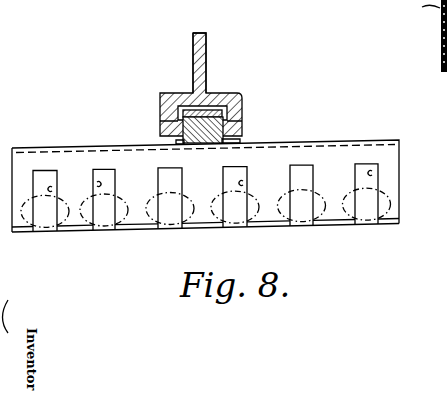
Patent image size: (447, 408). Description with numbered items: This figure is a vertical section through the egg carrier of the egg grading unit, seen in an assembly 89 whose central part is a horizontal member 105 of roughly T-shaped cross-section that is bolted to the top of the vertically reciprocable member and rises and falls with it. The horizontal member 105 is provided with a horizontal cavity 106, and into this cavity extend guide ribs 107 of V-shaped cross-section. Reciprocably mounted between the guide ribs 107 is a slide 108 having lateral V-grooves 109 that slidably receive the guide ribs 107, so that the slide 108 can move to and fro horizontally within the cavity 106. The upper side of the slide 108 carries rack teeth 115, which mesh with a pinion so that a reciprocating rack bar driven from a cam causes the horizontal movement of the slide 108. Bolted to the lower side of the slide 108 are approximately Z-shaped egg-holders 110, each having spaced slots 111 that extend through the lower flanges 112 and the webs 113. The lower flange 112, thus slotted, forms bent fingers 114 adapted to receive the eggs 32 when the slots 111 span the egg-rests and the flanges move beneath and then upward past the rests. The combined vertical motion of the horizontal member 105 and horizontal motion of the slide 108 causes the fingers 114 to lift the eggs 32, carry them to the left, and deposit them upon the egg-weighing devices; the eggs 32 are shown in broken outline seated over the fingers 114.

The eggs 32 is at (106, 228).
The clamp assembly 89 is at (204, 109).
The horizontal member 105 is at (207, 44).
The horizontal cavity 106 is at (243, 106).
The guide ribs 107 is at (243, 124).
The slide 108 is at (213, 150).
The lateral V-grooves 109 is at (186, 146).
The egg-holders 110 is at (347, 137).
The slots 111 is at (96, 184).
The lower flanges 112 is at (78, 229).
The webs 113 is at (409, 189).
The bent fingers 114 is at (152, 228).
The rack teeth 115 is at (213, 108).